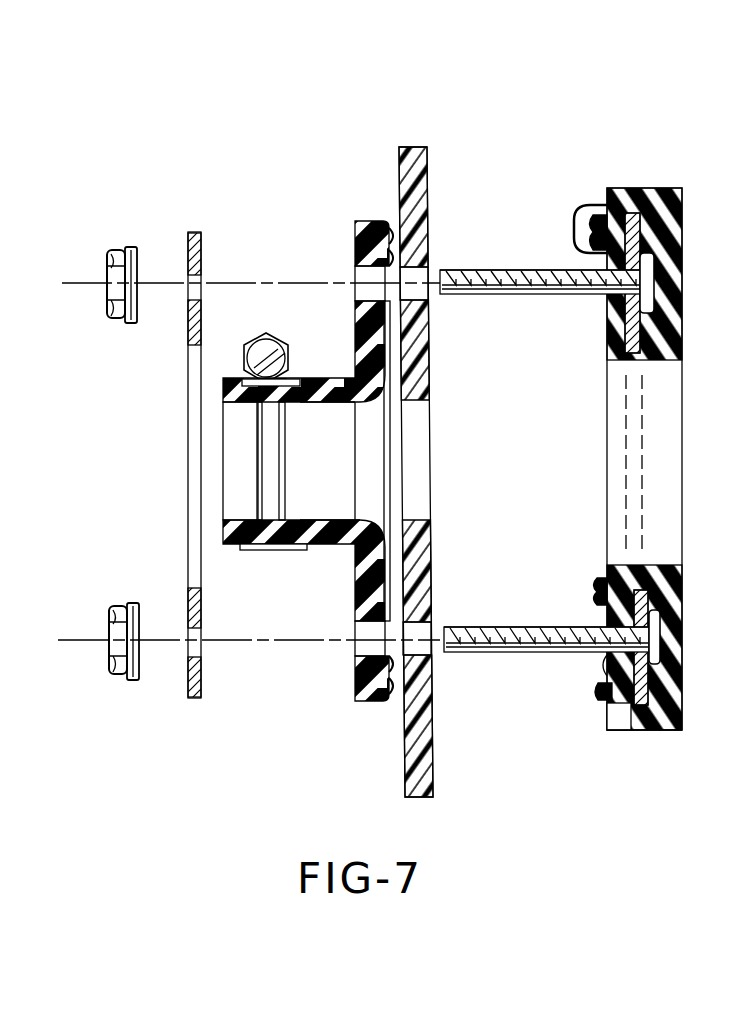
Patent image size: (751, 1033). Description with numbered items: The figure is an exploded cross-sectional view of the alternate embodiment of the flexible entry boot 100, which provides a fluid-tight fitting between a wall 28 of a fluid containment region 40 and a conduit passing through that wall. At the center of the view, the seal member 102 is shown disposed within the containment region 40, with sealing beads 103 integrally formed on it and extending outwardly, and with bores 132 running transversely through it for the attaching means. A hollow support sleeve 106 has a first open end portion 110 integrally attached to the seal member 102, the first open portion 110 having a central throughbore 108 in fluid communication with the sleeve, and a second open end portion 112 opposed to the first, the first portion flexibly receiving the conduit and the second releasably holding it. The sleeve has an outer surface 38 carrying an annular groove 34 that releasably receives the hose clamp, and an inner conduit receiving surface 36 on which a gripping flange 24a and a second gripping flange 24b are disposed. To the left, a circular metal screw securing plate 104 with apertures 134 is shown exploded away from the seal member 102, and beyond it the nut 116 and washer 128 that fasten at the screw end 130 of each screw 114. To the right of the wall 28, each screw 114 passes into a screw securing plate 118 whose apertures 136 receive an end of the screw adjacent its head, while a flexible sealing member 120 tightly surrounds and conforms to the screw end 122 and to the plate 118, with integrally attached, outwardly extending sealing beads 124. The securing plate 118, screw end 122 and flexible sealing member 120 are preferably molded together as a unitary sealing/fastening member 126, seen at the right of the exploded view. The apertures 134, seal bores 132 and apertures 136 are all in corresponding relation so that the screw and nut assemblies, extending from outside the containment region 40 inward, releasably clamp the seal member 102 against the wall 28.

The flexible entry boot 100 is at (618, 34).
The wall 28 is at (401, 147).
The fluid containment region 40 is at (256, 191).
The nut 116 is at (106, 254).
The washer 128 is at (124, 250).
The apertures 134 is at (197, 273).
The screw securing plate 104 is at (197, 700).
The bores 132 is at (358, 236).
The sealing beads 103 is at (399, 238).
The seal member 102 is at (365, 703).
The first open end portion 110 is at (372, 397).
The outer surface 38 is at (317, 373).
The second open end portion 112 is at (237, 410).
The gripping flange 24a is at (260, 433).
The second gripping flange 24b is at (278, 493).
The central throughbore 108 is at (307, 403).
The inner conduit receiving surface 36 is at (358, 402).
The annular groove 34 is at (233, 550).
The hollow support sleeve 106 is at (343, 548).
The screw end 130 is at (433, 267).
The screw 114 is at (490, 270).
The apertures 136 is at (600, 289).
The screw securing plate 118 is at (650, 190).
The screw end 122 is at (653, 262).
The sealing beads 124 is at (578, 205).
The unitary sealing/fastening member 126 is at (607, 705).
The flexible sealing member 120 is at (658, 731).